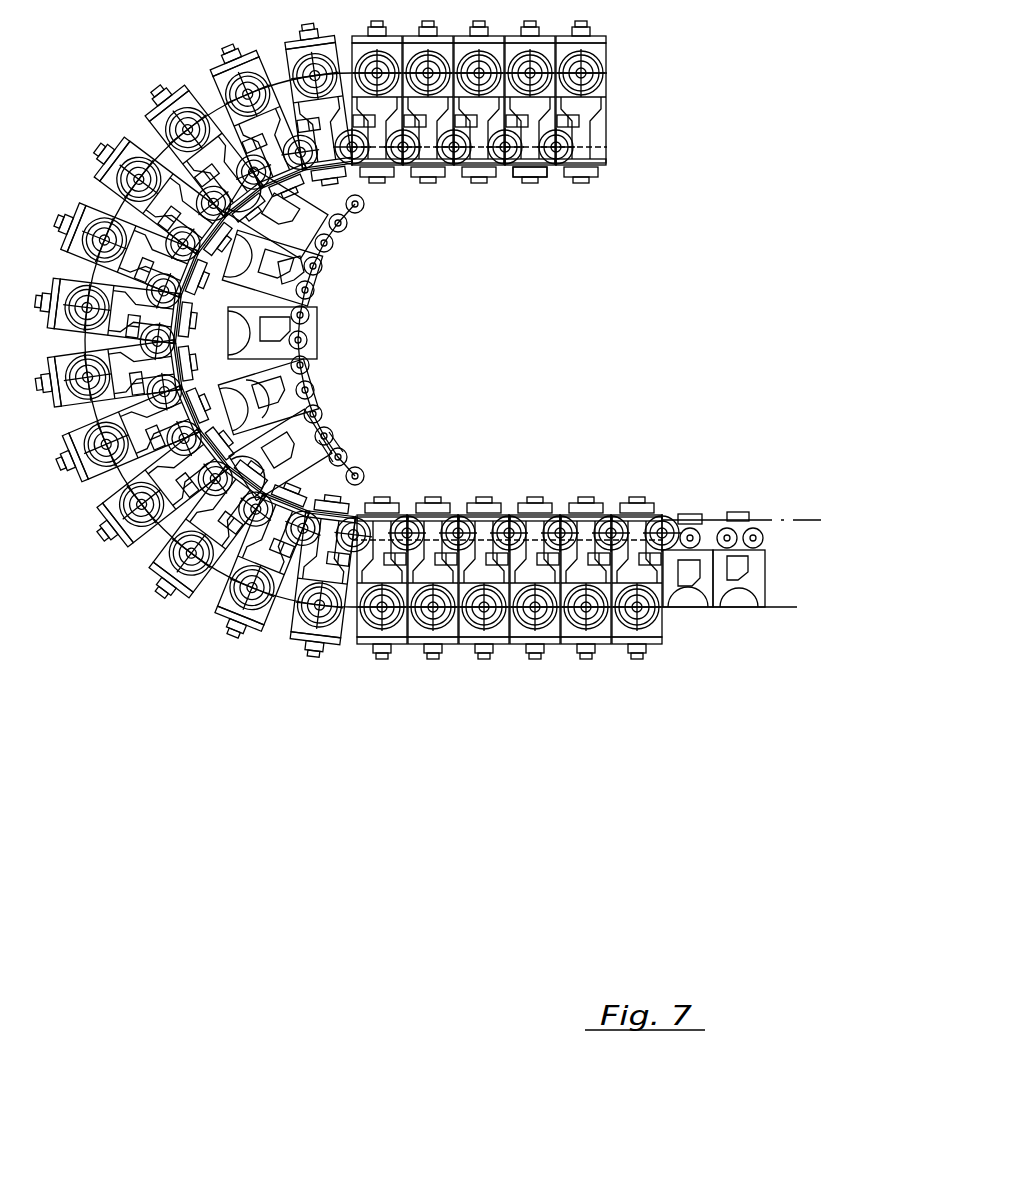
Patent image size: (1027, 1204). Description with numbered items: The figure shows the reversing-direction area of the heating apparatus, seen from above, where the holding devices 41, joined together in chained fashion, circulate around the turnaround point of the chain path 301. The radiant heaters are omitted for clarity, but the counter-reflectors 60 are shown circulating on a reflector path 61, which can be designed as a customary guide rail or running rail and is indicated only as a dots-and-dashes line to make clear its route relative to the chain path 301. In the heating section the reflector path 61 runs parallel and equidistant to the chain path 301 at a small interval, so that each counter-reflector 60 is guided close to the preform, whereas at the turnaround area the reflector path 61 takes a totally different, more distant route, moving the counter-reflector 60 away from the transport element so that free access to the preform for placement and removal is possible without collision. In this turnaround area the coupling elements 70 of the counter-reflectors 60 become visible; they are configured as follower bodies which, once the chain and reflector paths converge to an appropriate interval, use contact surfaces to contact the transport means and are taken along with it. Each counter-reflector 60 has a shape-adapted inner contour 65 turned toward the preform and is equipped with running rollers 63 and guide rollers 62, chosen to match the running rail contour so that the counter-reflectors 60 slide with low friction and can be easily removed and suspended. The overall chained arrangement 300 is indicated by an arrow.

The chain link assembly 300 is at (228, 742).
The chain path 301 is at (120, 213).
The holding device 41 is at (118, 562).
The counter-reflector 60 is at (266, 352).
The reflector path 61 is at (540, 178).
The guide roller 62 is at (318, 322).
The running roller 63 is at (333, 437).
The inner contour 65 is at (252, 408).
The coupling element 70 is at (288, 270).